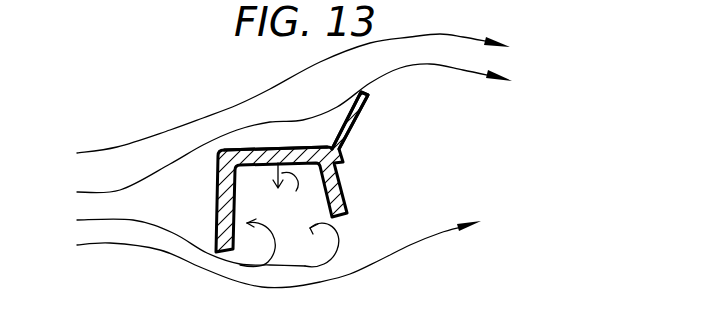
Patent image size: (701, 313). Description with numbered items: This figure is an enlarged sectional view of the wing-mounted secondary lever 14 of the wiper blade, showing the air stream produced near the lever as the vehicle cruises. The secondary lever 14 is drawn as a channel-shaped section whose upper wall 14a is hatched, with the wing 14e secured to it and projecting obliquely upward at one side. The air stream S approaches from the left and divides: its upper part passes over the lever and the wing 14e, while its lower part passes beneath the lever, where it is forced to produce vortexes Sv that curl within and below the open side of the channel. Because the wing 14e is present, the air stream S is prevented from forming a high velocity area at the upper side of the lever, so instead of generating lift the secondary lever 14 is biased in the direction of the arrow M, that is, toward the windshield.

The secondary lever 14 is at (217, 158).
The top wall of channel member 14a is at (289, 154).
The wing 14e is at (359, 116).
The air stream S is at (110, 243).
The arrow M (biasing direction) M is at (288, 186).
The vortexes Sv is at (260, 243).